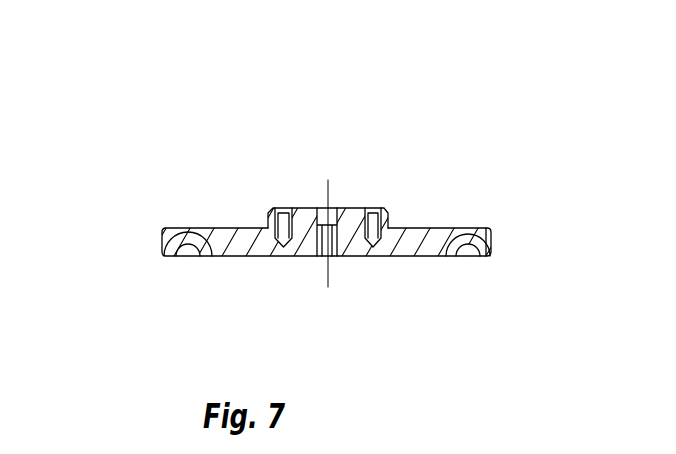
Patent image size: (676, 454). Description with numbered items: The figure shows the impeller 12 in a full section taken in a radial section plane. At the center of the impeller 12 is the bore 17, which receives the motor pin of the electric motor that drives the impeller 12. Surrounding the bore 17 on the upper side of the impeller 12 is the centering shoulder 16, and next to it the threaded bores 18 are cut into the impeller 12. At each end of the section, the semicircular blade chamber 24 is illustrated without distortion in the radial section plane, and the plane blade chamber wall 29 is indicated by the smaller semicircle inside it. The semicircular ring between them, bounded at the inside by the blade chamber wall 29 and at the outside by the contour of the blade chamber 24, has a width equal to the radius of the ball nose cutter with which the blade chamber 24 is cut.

The impeller 12 is at (215, 241).
The centering shoulder 16 is at (268, 222).
The bore 17 is at (328, 232).
The threaded bores 18 is at (380, 210).
The blade chamber 24 is at (477, 243).
The blade chamber wall 29 is at (470, 250).